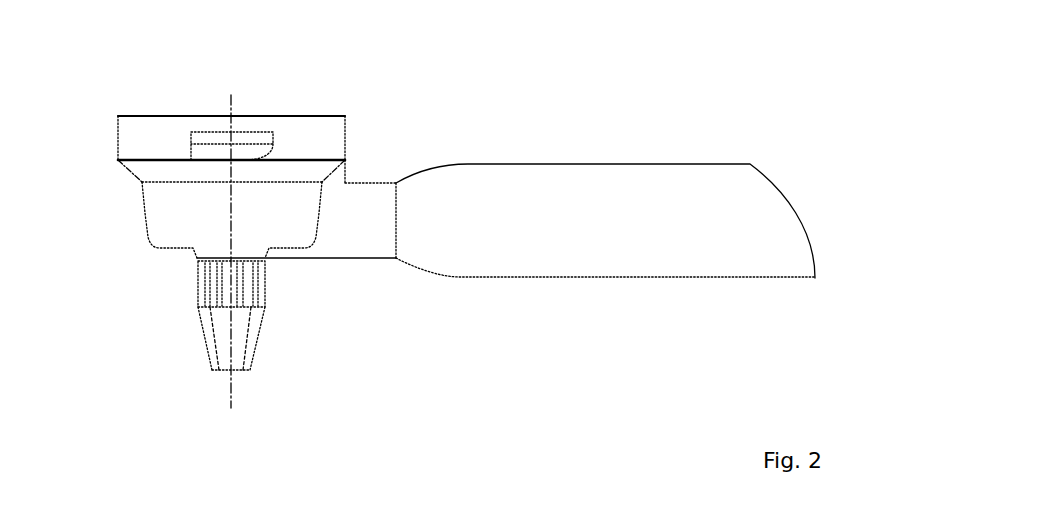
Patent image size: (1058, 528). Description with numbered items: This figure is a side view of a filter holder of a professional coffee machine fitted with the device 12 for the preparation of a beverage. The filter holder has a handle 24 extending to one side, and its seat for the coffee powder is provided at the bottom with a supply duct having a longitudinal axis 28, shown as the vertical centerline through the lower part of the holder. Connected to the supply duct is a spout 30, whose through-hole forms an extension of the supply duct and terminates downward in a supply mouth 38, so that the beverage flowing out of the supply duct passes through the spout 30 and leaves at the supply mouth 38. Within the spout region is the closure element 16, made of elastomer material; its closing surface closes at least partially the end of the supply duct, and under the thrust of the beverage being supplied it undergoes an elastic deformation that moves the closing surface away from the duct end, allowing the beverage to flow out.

The device 12 is at (197, 318).
The handle 24 is at (558, 164).
The spout 30 is at (197, 275).
The closure element 16 is at (235, 337).
The supply mouth 38 is at (238, 372).
The longitudinal axis 28 is at (229, 402).